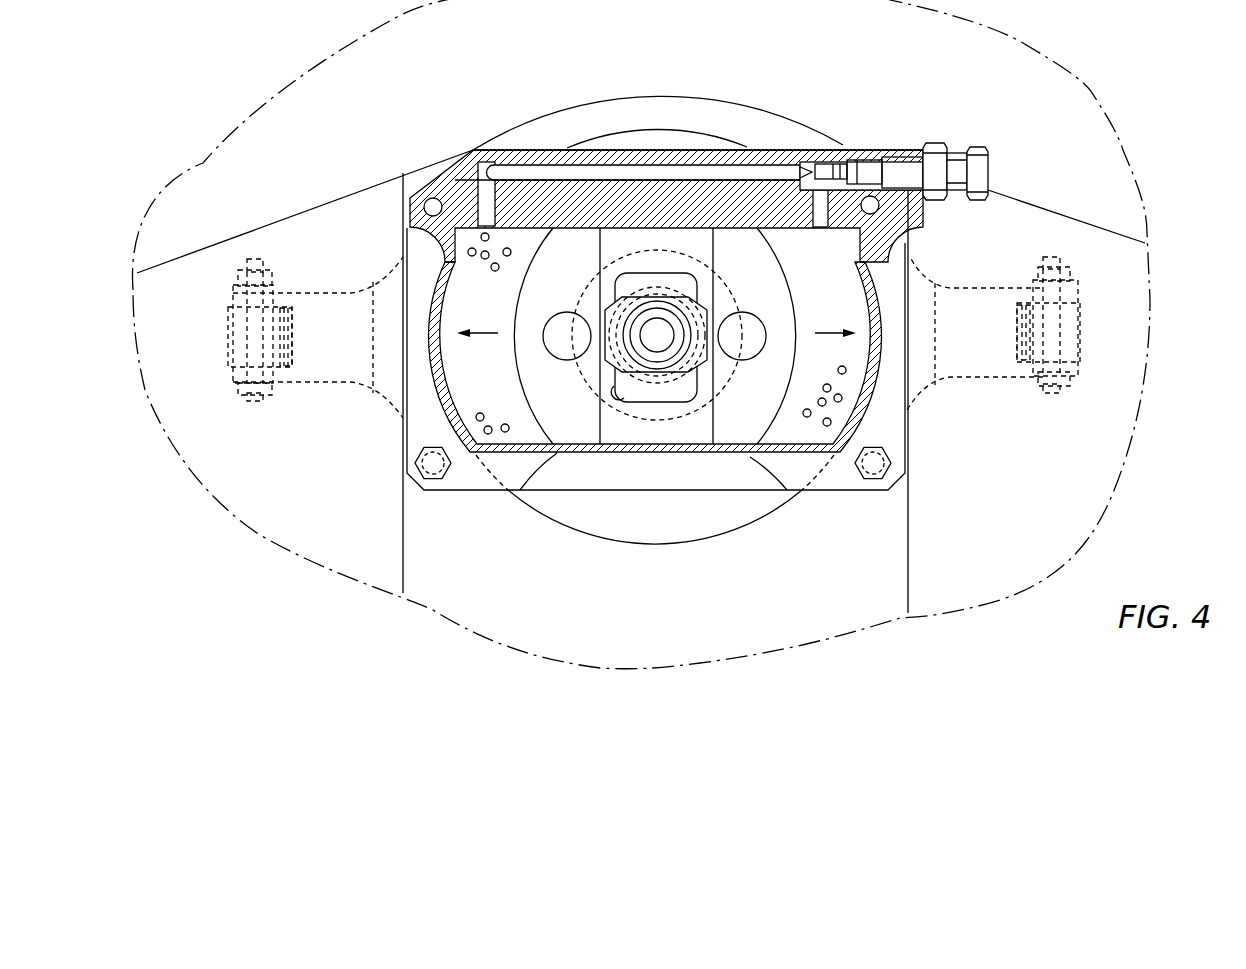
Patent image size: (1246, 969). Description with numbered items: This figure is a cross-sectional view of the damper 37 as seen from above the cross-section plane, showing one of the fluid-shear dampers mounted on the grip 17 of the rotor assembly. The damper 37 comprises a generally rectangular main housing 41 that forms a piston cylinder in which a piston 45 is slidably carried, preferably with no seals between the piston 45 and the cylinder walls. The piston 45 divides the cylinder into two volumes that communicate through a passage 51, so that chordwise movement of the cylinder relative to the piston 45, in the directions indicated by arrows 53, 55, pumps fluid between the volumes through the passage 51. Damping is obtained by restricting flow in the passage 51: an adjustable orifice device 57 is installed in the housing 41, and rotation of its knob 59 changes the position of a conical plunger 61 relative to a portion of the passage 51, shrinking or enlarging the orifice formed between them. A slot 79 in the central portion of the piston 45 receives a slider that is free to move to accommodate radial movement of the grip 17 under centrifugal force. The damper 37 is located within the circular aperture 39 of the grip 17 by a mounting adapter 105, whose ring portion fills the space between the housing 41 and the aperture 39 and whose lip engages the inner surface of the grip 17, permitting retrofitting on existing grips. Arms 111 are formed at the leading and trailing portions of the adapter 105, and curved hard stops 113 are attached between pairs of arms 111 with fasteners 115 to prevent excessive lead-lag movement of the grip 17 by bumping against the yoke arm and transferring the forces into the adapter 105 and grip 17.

The grip 17 is at (1097, 176).
The damper 37 is at (519, 147).
The aperture 39 is at (573, 532).
The main housing 41 is at (787, 150).
The piston 45 is at (737, 427).
The passage 51 is at (643, 170).
The arrow 53 is at (822, 326).
The arrow 55 is at (487, 333).
The adjustable orifice device 57 is at (938, 142).
The knob 59 is at (993, 158).
The conical plunger 61 is at (806, 167).
The slot 79 is at (623, 390).
The mounting adapter 105 is at (655, 522).
The arms 111 is at (330, 365).
The curved hard stops 113 is at (232, 332).
The fasteners 115 is at (262, 398).